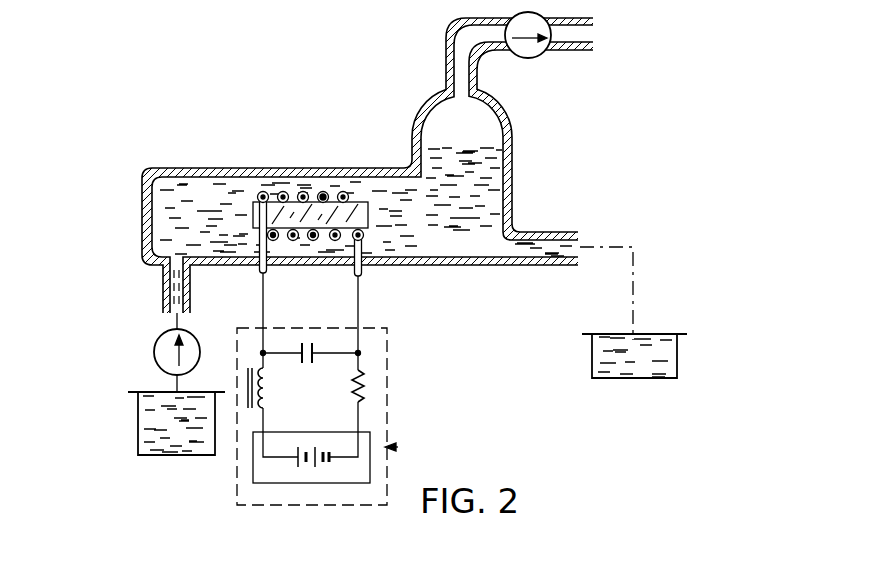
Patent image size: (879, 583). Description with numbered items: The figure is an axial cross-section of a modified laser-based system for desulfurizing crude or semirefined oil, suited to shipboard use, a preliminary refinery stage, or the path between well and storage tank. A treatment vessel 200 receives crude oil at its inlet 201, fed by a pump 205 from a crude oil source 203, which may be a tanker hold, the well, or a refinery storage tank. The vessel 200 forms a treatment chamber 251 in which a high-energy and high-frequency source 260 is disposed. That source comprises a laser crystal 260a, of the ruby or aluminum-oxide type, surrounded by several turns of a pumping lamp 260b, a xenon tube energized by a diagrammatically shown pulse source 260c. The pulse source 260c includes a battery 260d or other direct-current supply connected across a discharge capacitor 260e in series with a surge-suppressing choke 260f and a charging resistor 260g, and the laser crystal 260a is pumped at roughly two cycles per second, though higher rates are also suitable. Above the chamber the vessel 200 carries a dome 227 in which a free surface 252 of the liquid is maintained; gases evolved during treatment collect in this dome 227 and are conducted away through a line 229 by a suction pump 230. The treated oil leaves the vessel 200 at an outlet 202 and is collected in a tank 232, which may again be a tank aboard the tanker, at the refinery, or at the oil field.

The treatment vessel 200 is at (142, 182).
The inlet 201 is at (173, 318).
The outlet 202 is at (557, 232).
The crude oil source 203 is at (150, 435).
The pump 205 is at (152, 362).
The dome 227 is at (424, 105).
The line 229 is at (463, 15).
The suction pump 230 is at (544, 56).
The tank 232 is at (665, 382).
The treatment chamber 251 is at (160, 218).
The free surface 252 is at (490, 148).
The high-energy and high-frequency source 260 is at (365, 197).
The laser crystal 260a is at (375, 250).
The pumping lamp 260b is at (262, 192).
The pulse source 260c is at (365, 389).
The battery 260d is at (305, 468).
The discharge capacitor 260e is at (310, 343).
The surge-suppressing choke 260f is at (247, 408).
The charging resistor 260g is at (362, 388).